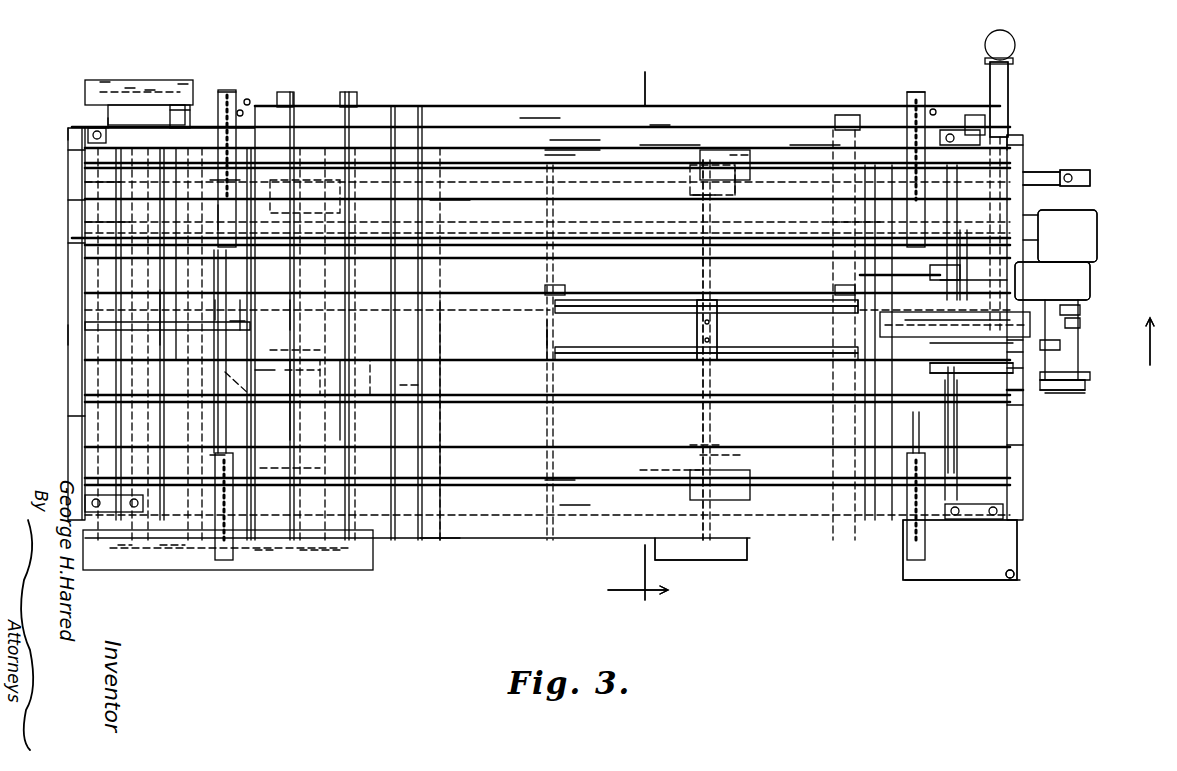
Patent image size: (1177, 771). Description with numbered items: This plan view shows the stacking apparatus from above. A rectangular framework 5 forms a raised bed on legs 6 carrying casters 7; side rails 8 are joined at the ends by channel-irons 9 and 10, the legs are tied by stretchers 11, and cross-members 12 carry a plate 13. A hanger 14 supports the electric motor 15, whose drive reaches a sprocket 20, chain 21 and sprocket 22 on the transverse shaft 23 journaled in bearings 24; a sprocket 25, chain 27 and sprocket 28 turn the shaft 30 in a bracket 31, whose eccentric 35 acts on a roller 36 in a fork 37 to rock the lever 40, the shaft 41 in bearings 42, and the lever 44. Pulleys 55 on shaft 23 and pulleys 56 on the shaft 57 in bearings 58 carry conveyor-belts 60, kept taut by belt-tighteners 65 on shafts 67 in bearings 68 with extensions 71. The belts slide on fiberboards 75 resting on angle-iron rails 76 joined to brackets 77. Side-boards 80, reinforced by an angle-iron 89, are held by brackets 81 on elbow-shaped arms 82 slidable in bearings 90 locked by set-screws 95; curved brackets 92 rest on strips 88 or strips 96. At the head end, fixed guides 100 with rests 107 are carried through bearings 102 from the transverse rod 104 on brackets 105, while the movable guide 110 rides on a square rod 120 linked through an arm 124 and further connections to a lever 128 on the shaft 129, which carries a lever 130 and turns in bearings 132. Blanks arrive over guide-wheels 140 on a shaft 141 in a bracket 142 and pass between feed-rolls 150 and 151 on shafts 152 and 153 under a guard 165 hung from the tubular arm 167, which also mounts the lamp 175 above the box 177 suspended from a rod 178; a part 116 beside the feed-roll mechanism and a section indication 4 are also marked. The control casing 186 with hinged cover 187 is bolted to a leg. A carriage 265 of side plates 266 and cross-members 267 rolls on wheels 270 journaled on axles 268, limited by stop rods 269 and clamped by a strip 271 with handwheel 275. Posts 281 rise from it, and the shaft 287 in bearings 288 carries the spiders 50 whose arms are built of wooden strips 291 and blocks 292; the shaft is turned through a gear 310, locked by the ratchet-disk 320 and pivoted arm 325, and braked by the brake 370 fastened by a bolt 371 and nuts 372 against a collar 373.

The section line 4- 4 is at (888, 456).
The rectangular framework 5 is at (445, 540).
The legs 6 is at (183, 545).
The casters 7 is at (640, 332).
The side rails 8 is at (455, 540).
The channel-iron 9 is at (68, 333).
The channel-iron 10 is at (1010, 345).
The stretchers 11 is at (500, 540).
The cross-members 12 is at (825, 555).
The plate 13 is at (420, 385).
The hanger 14 is at (340, 318).
The electric motor 15 is at (340, 213).
The sprocket 20 is at (182, 84).
The transmission chain 21 is at (150, 90).
The sprocket 22 is at (138, 78).
The transverse shaft 23 is at (138, 575).
The bearings 24 is at (108, 560).
The sprocket 25 is at (125, 560).
The chain 27 is at (175, 560).
The sprocket 28 is at (345, 570).
The shaft 30 is at (320, 468).
The bracket 31 is at (340, 428).
The eccentric 35 is at (340, 370).
The roller 36 is at (290, 350).
The fork 37 is at (300, 370).
The oscillatable lever 40 is at (240, 325).
The shaft 41 is at (262, 370).
The bearings 42 is at (250, 565).
The lever 44 is at (265, 560).
The rotary spiders 50 is at (690, 345).
The pulleys 55 is at (165, 200).
The pulleys 56 is at (960, 435).
The transverse shaft 57 is at (968, 520).
The bearings 58 is at (962, 530).
The conveyor-belts 60 is at (605, 405).
The belt-tighteners 65 is at (165, 545).
The shaft 67 is at (215, 310).
The bearings 68 is at (215, 460).
The rearward extension 71 is at (165, 430).
The fiberboard 75 is at (1020, 430).
The angle-iron rails 76 is at (1018, 478).
The angular brackets 77 is at (1020, 482).
The side-boards 80 is at (490, 405).
The brackets 81 is at (920, 405).
The elbow-shaped arms 82 is at (918, 540).
The sheet-metal strips 88 is at (1060, 455).
The angle-iron 89 is at (535, 405).
The bearings 90 is at (930, 525).
The curved brackets 92 is at (1020, 425).
The set-screws 95 is at (895, 545).
The sheet-metal strips 96 is at (1020, 505).
The fixed uprights 100 is at (945, 392).
The bearings 102 is at (1023, 405).
The transverse rod 104 is at (1020, 412).
The brackets 105 is at (1020, 520).
The rests 107 is at (935, 270).
The movable guide 110 is at (950, 315).
The plate 116 is at (945, 348).
The square rod 120 is at (1075, 322).
The arm 124 is at (1065, 310).
The rockable lever 128 is at (860, 323).
The shaft 129 is at (870, 222).
The lever 130 is at (780, 485).
The bearings 132 is at (860, 540).
The guide-wheels 140 is at (1050, 385).
The shaft 141 is at (1090, 377).
The bracket 142 is at (1090, 395).
The feed-rolls 150 is at (1023, 368).
The feed-rolls 151 is at (945, 365).
The shaft 152 is at (1023, 352).
The shaft 153 is at (1023, 445).
The guard 165 is at (1060, 345).
The tubular arm 167 is at (1008, 112).
The electric lamp 175 is at (1090, 268).
The box 177 is at (1095, 245).
The rod 178 is at (1072, 172).
The casing 186 is at (1010, 560).
The hinged cover 187 is at (1015, 580).
The carriage 265 is at (534, 349).
The side plates 266 is at (588, 535).
The cross-members 267 is at (850, 380).
The studs 268 is at (545, 480).
The stop rods 269 is at (945, 372).
The flanged wheels 270 is at (555, 520).
The vertical strip 271 is at (605, 485).
The handwheel 275 is at (605, 540).
The posts 281 is at (815, 385).
The shaft 287 is at (705, 385).
The bearings 288 is at (745, 480).
The strips 291 is at (790, 313).
The blocks 292 is at (800, 347).
The gear 310 is at (710, 445).
The ratchet-disk 320 is at (730, 455).
The pivoted arm 325 is at (665, 470).
The brake 370 is at (690, 178).
The bolt 371 is at (745, 158).
The nuts 372 is at (750, 180).
The collar 373 is at (700, 200).